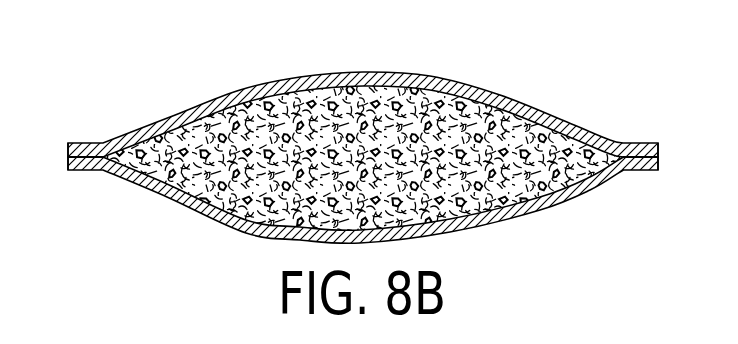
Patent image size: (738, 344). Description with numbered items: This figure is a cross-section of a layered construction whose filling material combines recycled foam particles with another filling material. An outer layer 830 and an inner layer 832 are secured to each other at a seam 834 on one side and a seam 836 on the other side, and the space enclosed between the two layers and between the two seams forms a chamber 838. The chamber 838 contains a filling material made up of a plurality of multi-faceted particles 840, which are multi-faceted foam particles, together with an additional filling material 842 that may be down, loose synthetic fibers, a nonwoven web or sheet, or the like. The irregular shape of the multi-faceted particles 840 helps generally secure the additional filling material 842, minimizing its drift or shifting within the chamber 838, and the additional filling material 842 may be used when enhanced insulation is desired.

The outer layer 830 is at (393, 72).
The inner layer 832 is at (508, 218).
The seam 834 is at (105, 156).
The seam 836 is at (657, 157).
The chamber 838 is at (511, 110).
The multi-faceted particles 840 is at (263, 222).
The additional filling material 842 is at (259, 100).